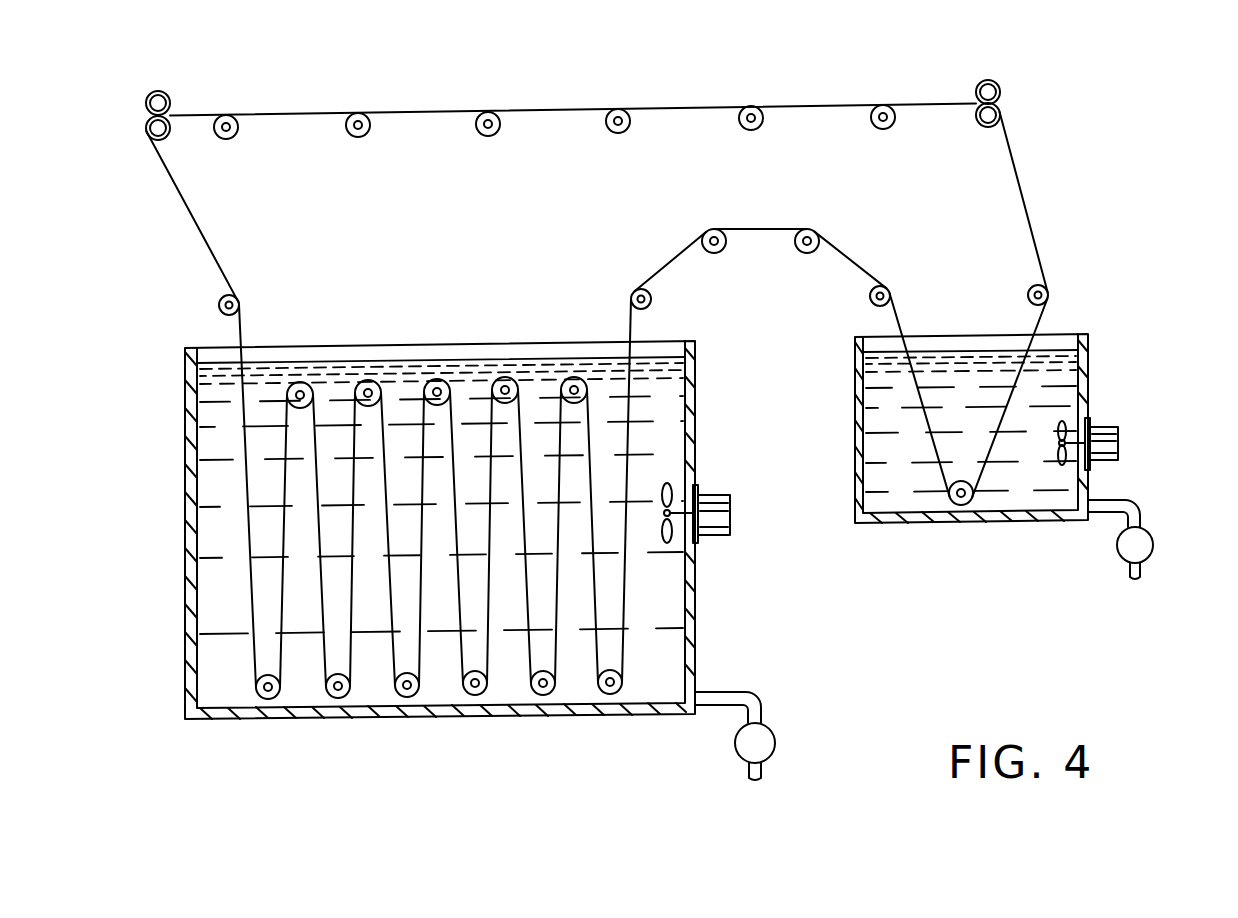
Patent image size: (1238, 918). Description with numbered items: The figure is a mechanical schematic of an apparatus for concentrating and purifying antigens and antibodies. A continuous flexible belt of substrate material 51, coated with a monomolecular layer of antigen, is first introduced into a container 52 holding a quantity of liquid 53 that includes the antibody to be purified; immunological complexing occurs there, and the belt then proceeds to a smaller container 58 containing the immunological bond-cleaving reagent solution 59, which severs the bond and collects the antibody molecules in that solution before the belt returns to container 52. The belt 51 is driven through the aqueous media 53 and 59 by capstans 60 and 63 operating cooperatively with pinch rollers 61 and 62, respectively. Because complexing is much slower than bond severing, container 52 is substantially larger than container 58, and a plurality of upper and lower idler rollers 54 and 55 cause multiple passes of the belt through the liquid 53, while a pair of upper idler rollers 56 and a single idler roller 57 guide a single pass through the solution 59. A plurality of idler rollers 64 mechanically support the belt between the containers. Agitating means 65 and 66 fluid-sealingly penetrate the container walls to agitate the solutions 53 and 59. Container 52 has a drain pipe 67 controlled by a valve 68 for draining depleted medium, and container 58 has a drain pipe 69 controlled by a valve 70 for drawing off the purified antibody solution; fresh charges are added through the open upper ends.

The continuous flexible belt of substrate material 51 is at (197, 113).
The container 52 is at (186, 455).
The liquid 53 is at (227, 583).
The upper idler rollers 54 is at (218, 305).
The lower idler rollers 55 is at (275, 698).
The upper idler rollers 56 is at (870, 300).
The idler roller 57 is at (957, 520).
The container 58 is at (857, 392).
The immunological bond-cleaving reagent solution 59 is at (882, 477).
The capstan 60 is at (980, 125).
The pinch roller 61 is at (1000, 85).
The pinch roller 62 is at (163, 90).
The capstan 63 is at (167, 136).
The idler rollers 64 is at (225, 139).
The agitating means 65 is at (722, 498).
The agitating means 66 is at (1118, 440).
The drain pipe 67 is at (725, 694).
The valve 68 is at (776, 738).
The drain pipe 69 is at (1146, 510).
The valve 70 is at (1155, 546).